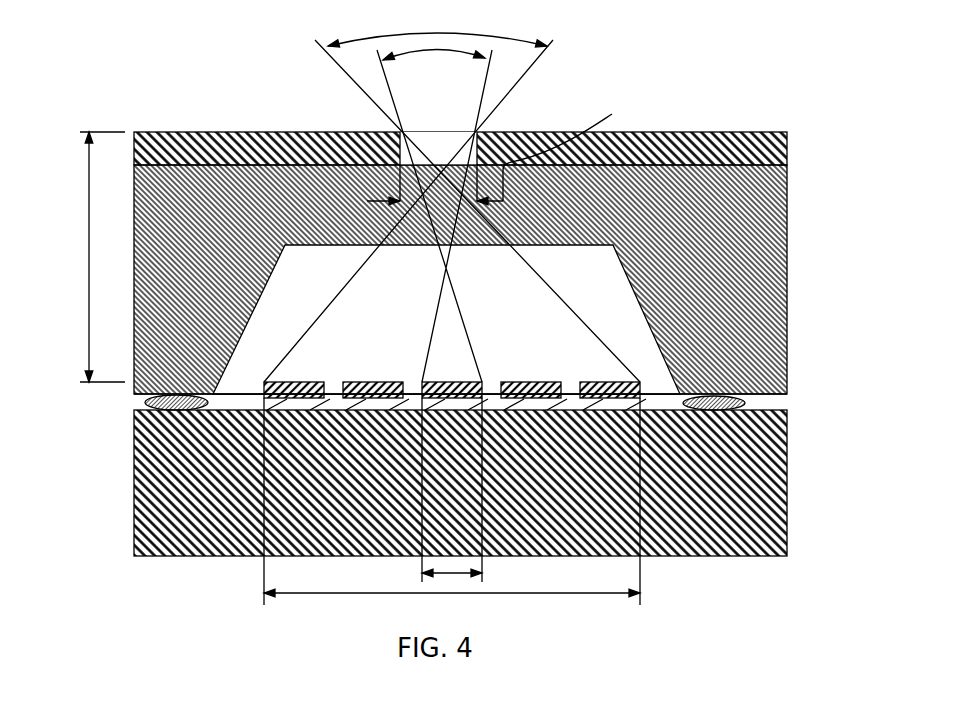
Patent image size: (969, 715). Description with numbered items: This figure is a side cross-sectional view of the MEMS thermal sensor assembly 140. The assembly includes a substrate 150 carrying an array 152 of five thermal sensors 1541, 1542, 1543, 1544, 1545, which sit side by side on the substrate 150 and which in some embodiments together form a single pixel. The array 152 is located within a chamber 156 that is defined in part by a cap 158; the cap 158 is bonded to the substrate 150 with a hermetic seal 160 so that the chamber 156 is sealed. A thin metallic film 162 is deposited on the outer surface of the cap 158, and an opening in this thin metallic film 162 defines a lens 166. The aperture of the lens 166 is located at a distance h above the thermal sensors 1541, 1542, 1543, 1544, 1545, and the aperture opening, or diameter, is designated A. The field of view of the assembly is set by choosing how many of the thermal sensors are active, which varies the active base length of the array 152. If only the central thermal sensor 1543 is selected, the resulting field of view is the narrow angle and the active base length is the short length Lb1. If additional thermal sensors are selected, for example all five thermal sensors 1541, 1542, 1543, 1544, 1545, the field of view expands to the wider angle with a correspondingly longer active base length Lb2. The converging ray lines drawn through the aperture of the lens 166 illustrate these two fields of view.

The MEMS thermal sensor assembly 140 is at (476, 324).
The substrate 150 is at (787, 480).
The array 152 is at (382, 312).
The thermal sensor 1541 is at (318, 382).
The thermal sensor 1542 is at (362, 382).
The thermal sensor 1543 is at (437, 382).
The thermal sensor 1544 is at (540, 382).
The thermal sensor 1545 is at (612, 382).
The chamber 156 is at (635, 288).
The cap 158 is at (787, 228).
The hermetic seal 160 is at (745, 403).
The thin metallic film 162 is at (787, 152).
The lens 166 is at (470, 163).
The aperture opening A is at (493, 154).
The distance h is at (84, 218).
The active base length Lb1 is at (462, 578).
The active base length Lb2 is at (552, 593).